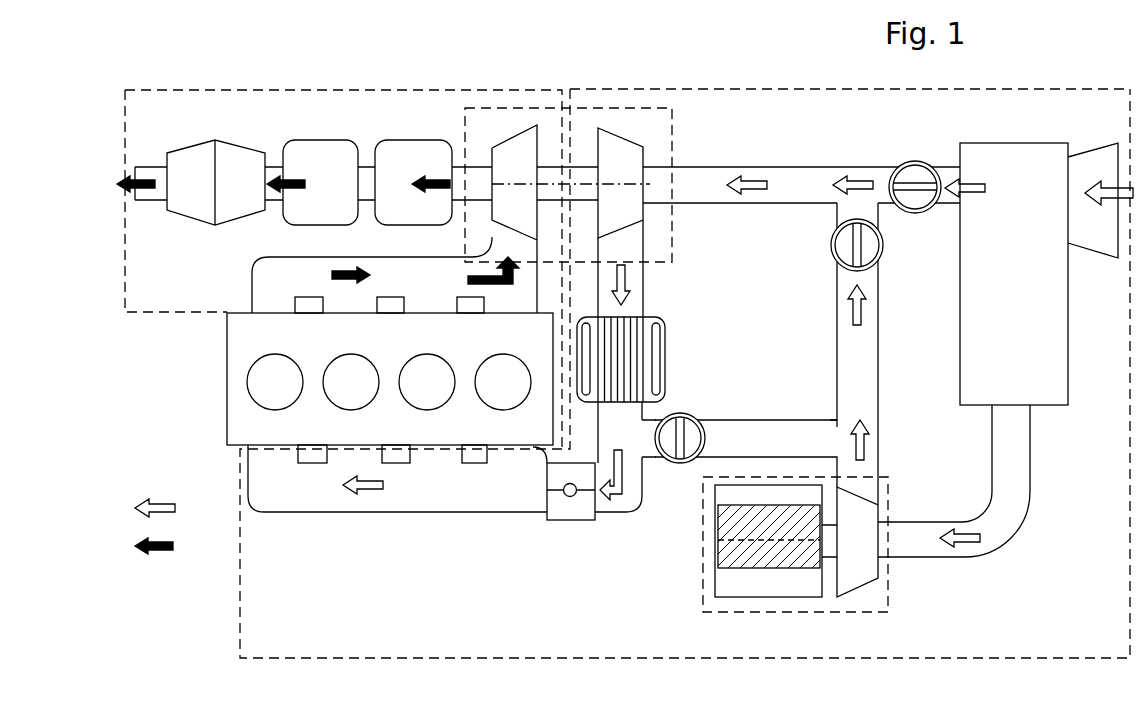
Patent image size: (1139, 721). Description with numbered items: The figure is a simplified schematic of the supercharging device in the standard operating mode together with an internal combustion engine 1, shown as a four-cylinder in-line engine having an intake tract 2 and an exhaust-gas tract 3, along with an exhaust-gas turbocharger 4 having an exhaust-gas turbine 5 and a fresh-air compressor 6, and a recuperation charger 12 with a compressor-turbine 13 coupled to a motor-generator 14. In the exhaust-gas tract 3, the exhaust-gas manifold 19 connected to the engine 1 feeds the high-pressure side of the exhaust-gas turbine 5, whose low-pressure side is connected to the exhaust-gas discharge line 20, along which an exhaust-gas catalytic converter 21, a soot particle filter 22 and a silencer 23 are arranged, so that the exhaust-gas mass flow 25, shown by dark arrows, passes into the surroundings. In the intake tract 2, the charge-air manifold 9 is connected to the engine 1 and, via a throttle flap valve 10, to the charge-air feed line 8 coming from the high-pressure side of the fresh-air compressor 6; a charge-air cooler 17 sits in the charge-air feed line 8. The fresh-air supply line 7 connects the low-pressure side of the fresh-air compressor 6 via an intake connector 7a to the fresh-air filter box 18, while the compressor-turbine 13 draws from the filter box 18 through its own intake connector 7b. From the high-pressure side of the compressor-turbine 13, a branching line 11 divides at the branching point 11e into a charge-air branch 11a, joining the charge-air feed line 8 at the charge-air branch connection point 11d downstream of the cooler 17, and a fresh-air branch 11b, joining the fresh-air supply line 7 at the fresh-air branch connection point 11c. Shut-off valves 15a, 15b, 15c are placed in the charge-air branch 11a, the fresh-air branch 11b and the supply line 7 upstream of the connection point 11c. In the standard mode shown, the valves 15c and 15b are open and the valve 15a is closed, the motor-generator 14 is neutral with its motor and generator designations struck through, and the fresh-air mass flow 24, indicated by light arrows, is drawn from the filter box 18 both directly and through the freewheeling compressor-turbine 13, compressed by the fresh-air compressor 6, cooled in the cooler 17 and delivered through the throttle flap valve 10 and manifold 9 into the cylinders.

The internal combustion engine 1 is at (227, 415).
The intake tract 2 is at (240, 578).
The exhaust-gas tract 3 is at (160, 313).
The exhaust-gas turbocharger 4 is at (590, 105).
The exhaust-gas turbine 5 is at (515, 152).
The fresh-air compressor 6 is at (622, 160).
The fresh-air supply line 7 is at (795, 188).
The intake connector 7a is at (955, 176).
The intake connector 7b is at (936, 542).
The charge-air feed line 8 is at (635, 277).
The charge-air manifold 9 is at (396, 500).
The throttle flap valve 10 is at (563, 507).
The branching line 11 is at (880, 460).
The charge-air branch 11a is at (771, 432).
The fresh-air branch 11b is at (858, 352).
The fresh-air branch connection point 11c is at (857, 187).
The charge-air branch connection point 11d is at (645, 432).
The branching point 11e is at (835, 418).
The recuperation charger 12 is at (822, 612).
The compressor-turbine 13 is at (857, 560).
The motor-generator 14 is at (740, 575).
The shut-off valve 15a is at (683, 462).
The shut-off valve 15b is at (842, 243).
The shut-off valve 15c is at (908, 183).
The charge-air cooler 17 is at (665, 358).
The fresh-air filter box 18 is at (1046, 274).
The exhaust-gas manifold 19 is at (262, 283).
The exhaust-gas discharge line 20 is at (478, 170).
The exhaust-gas catalytic converter 21 is at (418, 155).
The soot particle filter 22 is at (319, 155).
The silencer 23 is at (233, 155).
The fresh-air mass flow 24 is at (171, 509).
The exhaust-gas mass flow 25 is at (171, 547).